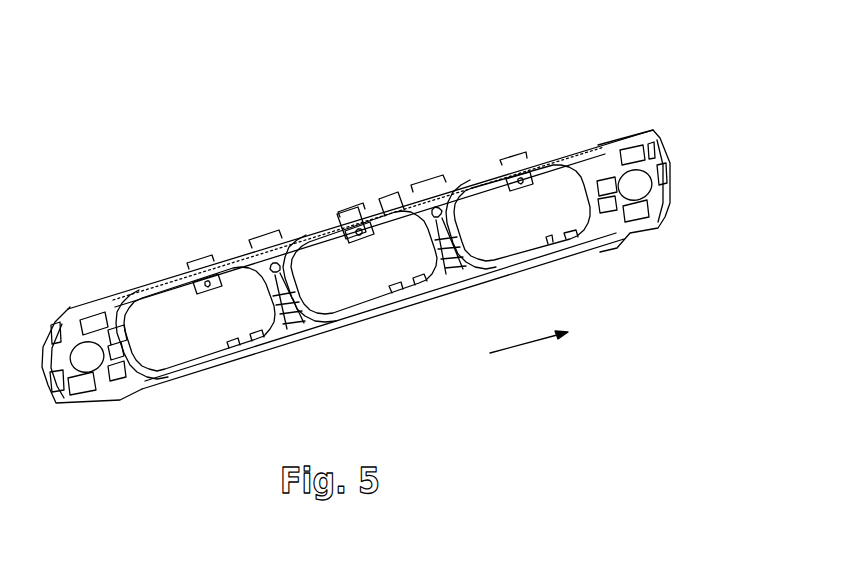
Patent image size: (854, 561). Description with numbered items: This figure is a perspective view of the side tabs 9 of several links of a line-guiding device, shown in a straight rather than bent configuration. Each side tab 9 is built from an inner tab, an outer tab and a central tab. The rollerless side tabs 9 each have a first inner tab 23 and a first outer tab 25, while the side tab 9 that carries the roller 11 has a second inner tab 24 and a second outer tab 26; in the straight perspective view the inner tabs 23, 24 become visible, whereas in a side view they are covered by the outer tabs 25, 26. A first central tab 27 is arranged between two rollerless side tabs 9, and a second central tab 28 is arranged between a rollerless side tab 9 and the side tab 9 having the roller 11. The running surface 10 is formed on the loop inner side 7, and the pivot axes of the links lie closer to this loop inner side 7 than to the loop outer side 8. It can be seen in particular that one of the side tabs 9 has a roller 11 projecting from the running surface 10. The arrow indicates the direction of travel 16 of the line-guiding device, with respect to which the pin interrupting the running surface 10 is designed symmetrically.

The loop inner side 7 is at (627, 136).
The running surface 10 is at (424, 214).
The loop outer side 8 is at (323, 330).
The side tabs 9 is at (45, 229).
The roller 11 is at (367, 228).
The direction of travel 16 is at (527, 343).
The first inner tab 23 is at (183, 280).
The second inner tab 24 is at (345, 235).
The first outer tab 25 is at (212, 262).
The second outer tab 26 is at (376, 214).
The first central tab 27 is at (114, 300).
The second central tab 28 is at (273, 247).